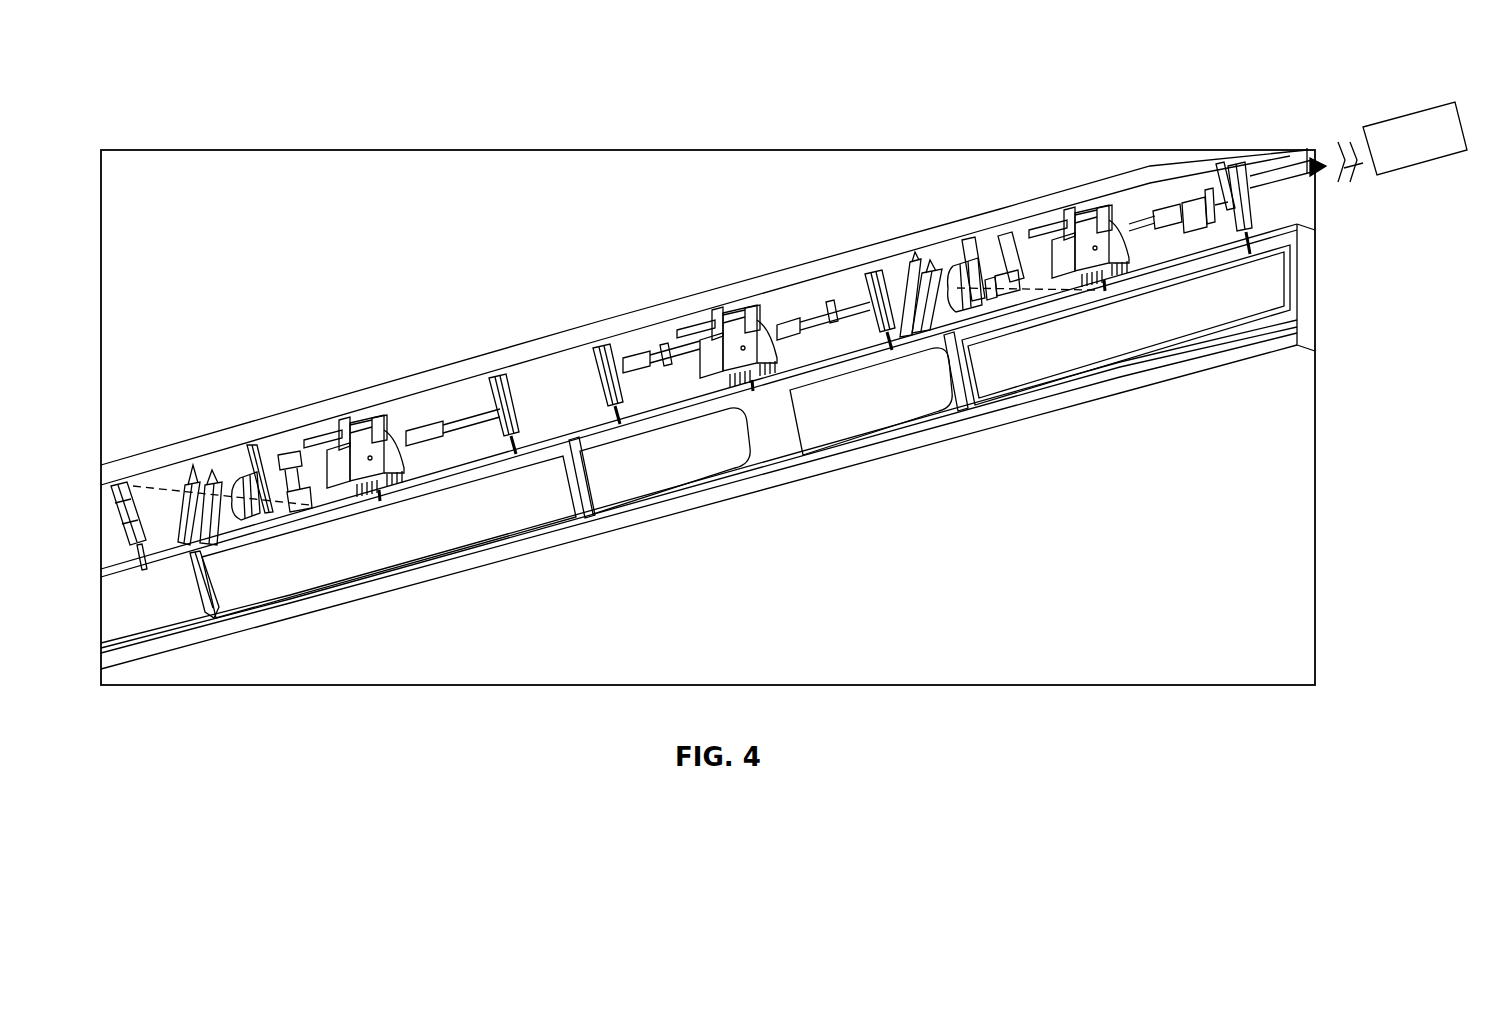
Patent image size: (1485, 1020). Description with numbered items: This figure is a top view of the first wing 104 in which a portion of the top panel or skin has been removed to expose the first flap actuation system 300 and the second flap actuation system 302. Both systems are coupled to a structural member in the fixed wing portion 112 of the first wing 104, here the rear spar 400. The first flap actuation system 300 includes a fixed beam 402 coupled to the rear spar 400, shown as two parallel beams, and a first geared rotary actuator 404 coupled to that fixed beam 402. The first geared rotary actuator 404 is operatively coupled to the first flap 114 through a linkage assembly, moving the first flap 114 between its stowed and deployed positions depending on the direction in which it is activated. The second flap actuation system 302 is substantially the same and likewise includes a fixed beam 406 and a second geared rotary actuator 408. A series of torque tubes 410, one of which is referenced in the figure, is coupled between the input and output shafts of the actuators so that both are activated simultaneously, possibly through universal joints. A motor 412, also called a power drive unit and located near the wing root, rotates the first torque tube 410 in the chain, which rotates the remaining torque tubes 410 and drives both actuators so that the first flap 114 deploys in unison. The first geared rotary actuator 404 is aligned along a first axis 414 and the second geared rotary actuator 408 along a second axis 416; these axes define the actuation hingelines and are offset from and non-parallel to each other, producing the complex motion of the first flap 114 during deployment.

The first wing 104 is at (248, 172).
The fixed wing portion 112 is at (542, 186).
The first flap 114 is at (390, 542).
The first flap actuation system 300 is at (895, 246).
The second flap actuation system 302 is at (218, 440).
The rear spar 400 is at (470, 372).
The fixed beam 402 is at (920, 265).
The first geared rotary actuator 404 is at (987, 240).
The fixed beam 406 is at (188, 468).
The second geared rotary actuator 408 is at (268, 445).
The torque tube 410 is at (555, 385).
The motor 412 is at (1412, 130).
The first axis 414 is at (858, 290).
The second axis 416 is at (143, 490).